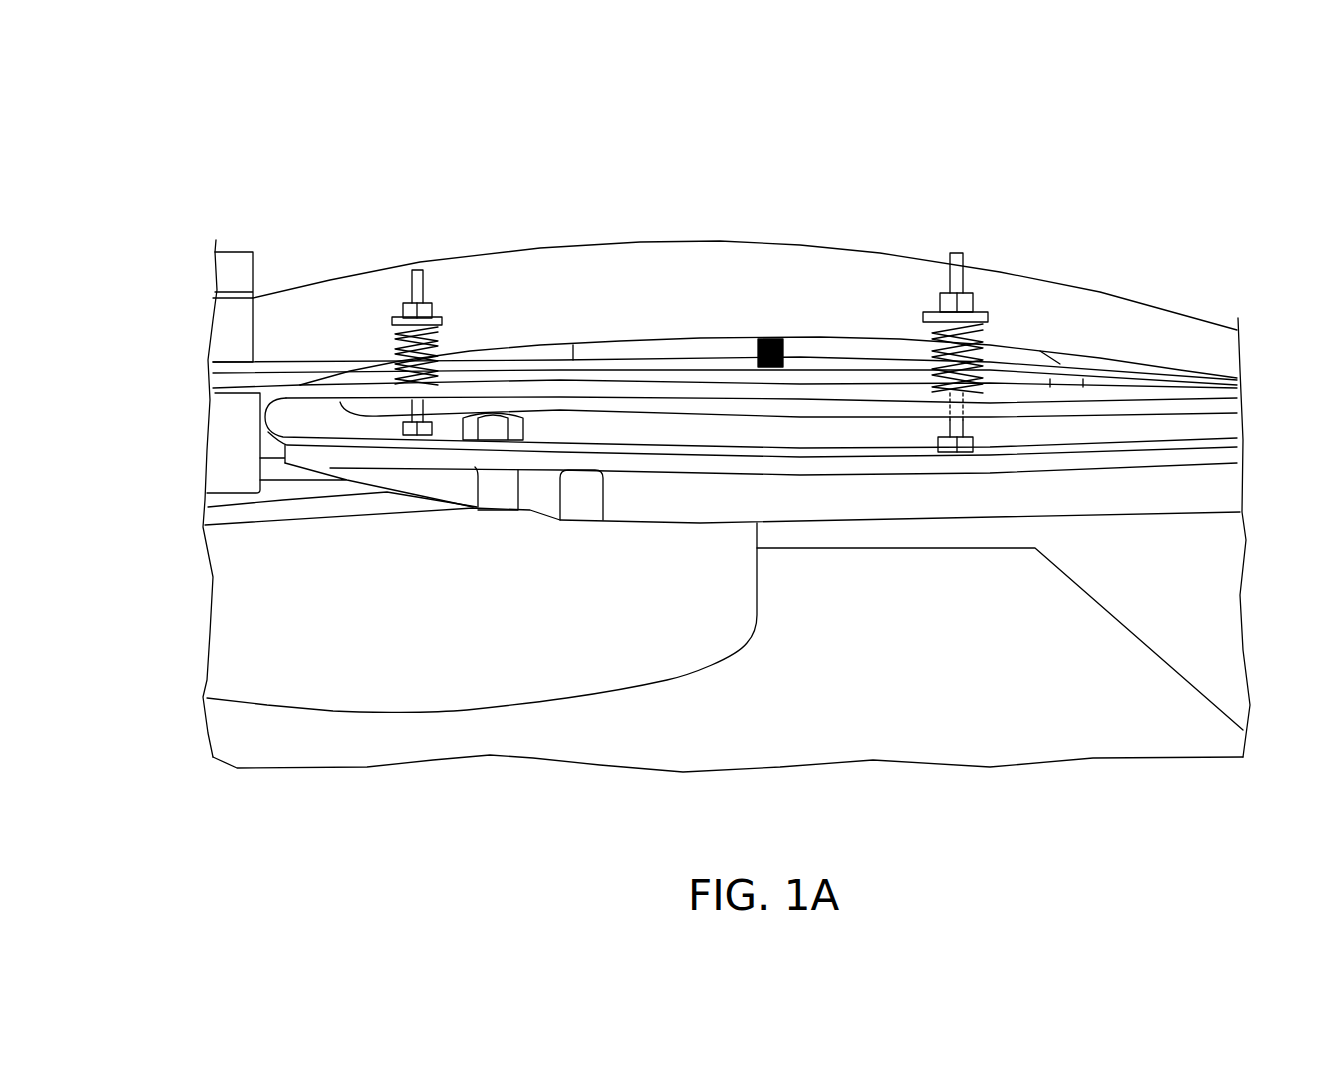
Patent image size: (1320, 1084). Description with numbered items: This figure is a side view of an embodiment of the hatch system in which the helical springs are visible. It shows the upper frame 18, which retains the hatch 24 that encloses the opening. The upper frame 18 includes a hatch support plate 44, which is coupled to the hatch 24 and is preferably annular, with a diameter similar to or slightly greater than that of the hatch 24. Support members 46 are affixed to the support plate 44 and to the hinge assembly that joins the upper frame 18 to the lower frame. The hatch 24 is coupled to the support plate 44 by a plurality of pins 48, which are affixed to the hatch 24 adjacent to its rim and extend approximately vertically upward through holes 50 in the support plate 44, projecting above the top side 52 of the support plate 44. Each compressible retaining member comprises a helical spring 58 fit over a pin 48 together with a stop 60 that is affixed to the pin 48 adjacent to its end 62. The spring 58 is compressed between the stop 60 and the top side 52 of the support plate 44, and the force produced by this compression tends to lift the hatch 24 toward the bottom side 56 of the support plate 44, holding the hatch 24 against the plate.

The upper frame 18 is at (899, 153).
The hatch 24 is at (675, 511).
The hatch support plate 44 is at (1210, 395).
The support members 46 is at (587, 257).
The pins 48 is at (413, 293).
The holes 50 is at (972, 393).
The top side 52 is at (797, 393).
The bottom side 56 is at (733, 417).
The helical spring 58 is at (298, 388).
The stop 60 is at (443, 320).
The end 62 is at (421, 268).